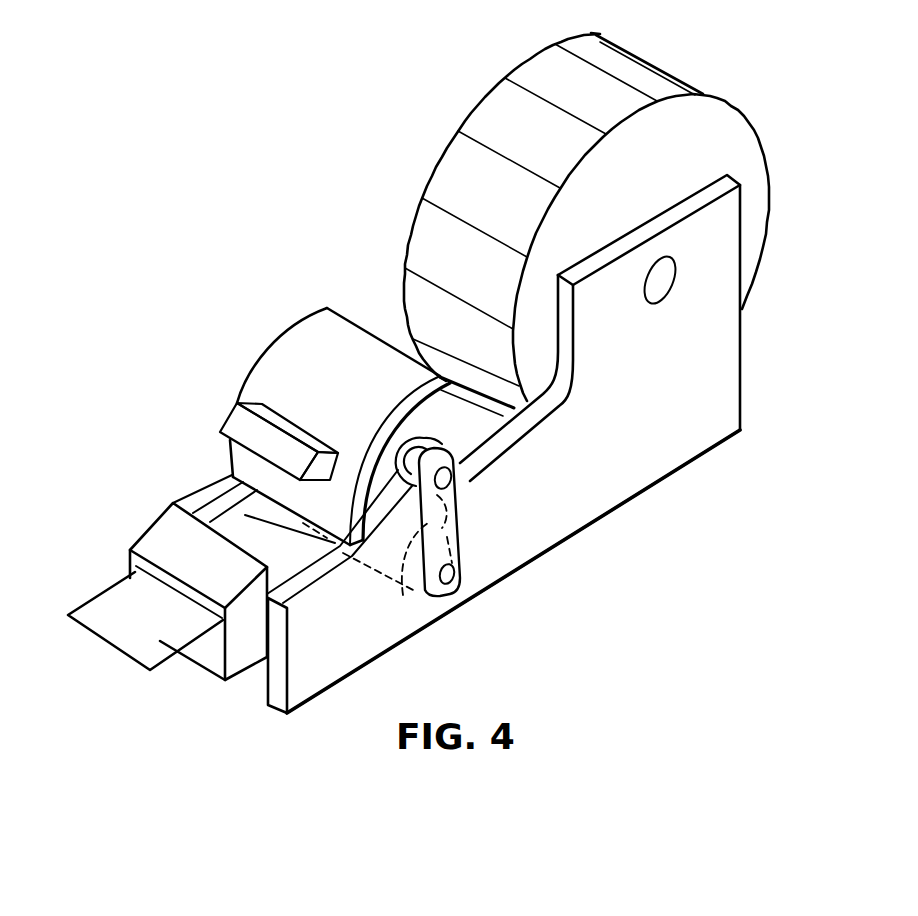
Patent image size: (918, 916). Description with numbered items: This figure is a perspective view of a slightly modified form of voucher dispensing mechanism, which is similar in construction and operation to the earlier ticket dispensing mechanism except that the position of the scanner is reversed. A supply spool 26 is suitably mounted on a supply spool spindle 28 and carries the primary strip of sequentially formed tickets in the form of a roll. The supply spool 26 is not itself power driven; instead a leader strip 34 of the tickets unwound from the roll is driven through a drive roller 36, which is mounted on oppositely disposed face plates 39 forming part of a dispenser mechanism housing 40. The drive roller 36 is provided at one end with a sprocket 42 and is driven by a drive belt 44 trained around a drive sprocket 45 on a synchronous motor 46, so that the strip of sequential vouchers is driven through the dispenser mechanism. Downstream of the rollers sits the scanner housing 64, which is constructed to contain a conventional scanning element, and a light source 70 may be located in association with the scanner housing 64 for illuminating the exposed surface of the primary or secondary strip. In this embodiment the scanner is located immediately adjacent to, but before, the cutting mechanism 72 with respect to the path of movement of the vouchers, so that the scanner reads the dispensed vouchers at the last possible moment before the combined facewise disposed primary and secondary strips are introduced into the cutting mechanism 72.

The supply spool 26 is at (726, 130).
The supply spool spindle 28 is at (670, 292).
The leader strip 34 is at (478, 430).
The drive roller 36 is at (403, 433).
The face plates 39 is at (598, 490).
The dispenser mechanism housing 40 is at (720, 460).
The sprocket 42 is at (452, 480).
The drive belt 44 is at (460, 520).
The drive sprocket 45 is at (453, 587).
The synchronous motor 46 is at (405, 588).
The scanner housing 64 is at (288, 338).
The light source 70 is at (236, 404).
The cutting mechanism 72 is at (200, 695).